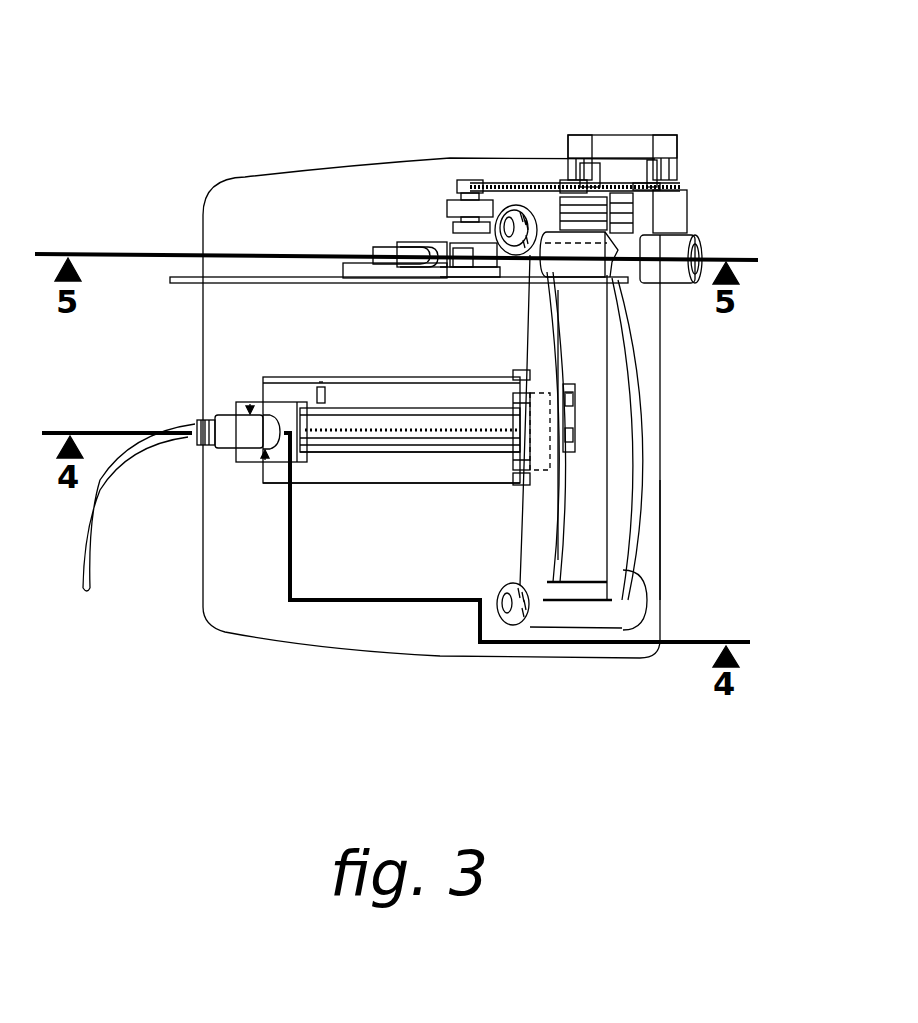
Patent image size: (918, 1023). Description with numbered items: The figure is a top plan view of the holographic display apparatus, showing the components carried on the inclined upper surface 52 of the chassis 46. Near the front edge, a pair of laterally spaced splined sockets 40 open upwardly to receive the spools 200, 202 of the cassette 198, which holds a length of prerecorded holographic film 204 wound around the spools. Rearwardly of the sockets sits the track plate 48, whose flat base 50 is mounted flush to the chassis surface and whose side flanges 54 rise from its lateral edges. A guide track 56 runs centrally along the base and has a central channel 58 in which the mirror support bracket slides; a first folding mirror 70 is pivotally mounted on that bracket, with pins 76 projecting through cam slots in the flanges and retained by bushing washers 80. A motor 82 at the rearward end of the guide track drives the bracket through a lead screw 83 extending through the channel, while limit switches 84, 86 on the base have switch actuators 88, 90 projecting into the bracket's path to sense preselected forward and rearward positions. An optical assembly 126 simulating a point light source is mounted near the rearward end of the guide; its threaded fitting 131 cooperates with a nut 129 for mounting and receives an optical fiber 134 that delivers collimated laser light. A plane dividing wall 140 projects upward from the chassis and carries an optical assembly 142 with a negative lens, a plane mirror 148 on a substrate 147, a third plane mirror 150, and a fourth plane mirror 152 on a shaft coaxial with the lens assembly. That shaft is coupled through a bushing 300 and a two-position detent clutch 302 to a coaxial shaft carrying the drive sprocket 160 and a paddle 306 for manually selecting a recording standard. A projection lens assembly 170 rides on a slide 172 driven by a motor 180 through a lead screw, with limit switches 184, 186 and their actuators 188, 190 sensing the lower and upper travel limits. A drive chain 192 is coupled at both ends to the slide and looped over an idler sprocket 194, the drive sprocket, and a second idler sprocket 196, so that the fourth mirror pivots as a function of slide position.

The sockets 40 is at (633, 590).
The chassis 46 is at (663, 547).
The track plate 48 is at (313, 372).
The base 50 is at (427, 470).
The upper surface 52 is at (336, 195).
The side flanges 54 is at (415, 472).
The guide track 56 is at (418, 410).
The central channel 58 is at (377, 437).
The first folding mirror 70 is at (522, 460).
The pins 76 is at (527, 488).
The bushing washers 80 is at (517, 490).
The motor 82 is at (250, 458).
The lead screw 83 is at (460, 430).
The limit switch 84 is at (323, 386).
The limit switch 86 is at (568, 385).
The switch actuator 88 is at (323, 400).
The switch actuator 90 is at (573, 405).
The optical assembly 126 is at (250, 403).
The nut 129 is at (207, 417).
The threaded fitting 131 is at (197, 420).
The optical fiber 134 is at (97, 543).
The dividing wall 140 is at (190, 285).
The optical assembly 142 is at (387, 249).
The substrate 147 is at (368, 273).
The plane mirror 148 is at (415, 245).
The third plane mirror 150 is at (493, 290).
The fourth plane mirror 152 is at (477, 283).
The drive sprocket 160 is at (470, 180).
The projection lens assembly 170 is at (700, 245).
The slide 172 is at (610, 173).
The motor 180 is at (687, 210).
The limit switch 184 is at (677, 150).
The limit switch 186 is at (575, 135).
The switch actuator 188 is at (665, 180).
The switch actuator 190 is at (560, 170).
The drive chain 192 is at (527, 197).
The idler sprocket 194 is at (570, 177).
The second idler sprocket 196 is at (675, 185).
The cassette 198 is at (648, 478).
The spool 200 is at (513, 618).
The spool 202 is at (497, 200).
The holographic film 204 is at (622, 515).
The bushing 300 is at (460, 245).
The two-position detent clutch 302 is at (457, 197).
The paddle 306 is at (463, 185).